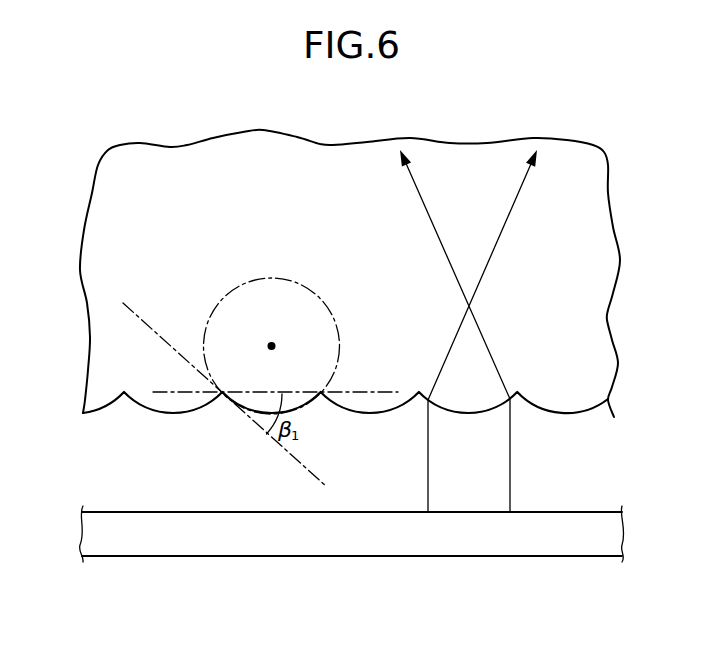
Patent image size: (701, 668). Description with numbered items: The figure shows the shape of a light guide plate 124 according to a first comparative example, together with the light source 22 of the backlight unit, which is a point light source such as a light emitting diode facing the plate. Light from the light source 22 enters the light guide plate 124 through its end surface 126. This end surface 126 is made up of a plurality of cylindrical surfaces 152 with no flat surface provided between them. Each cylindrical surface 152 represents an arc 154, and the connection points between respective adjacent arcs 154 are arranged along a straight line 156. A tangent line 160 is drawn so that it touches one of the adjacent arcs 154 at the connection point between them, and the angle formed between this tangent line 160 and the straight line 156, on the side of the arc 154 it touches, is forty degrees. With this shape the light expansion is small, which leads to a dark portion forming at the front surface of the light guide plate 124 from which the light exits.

The light source 22 is at (568, 543).
The light guide plate 124 is at (262, 153).
The end surface 126 is at (183, 419).
The cylindrical surface 152 is at (330, 503).
The arc 154 is at (152, 412).
The straight line 156 is at (375, 392).
The tangent line 160 is at (292, 459).